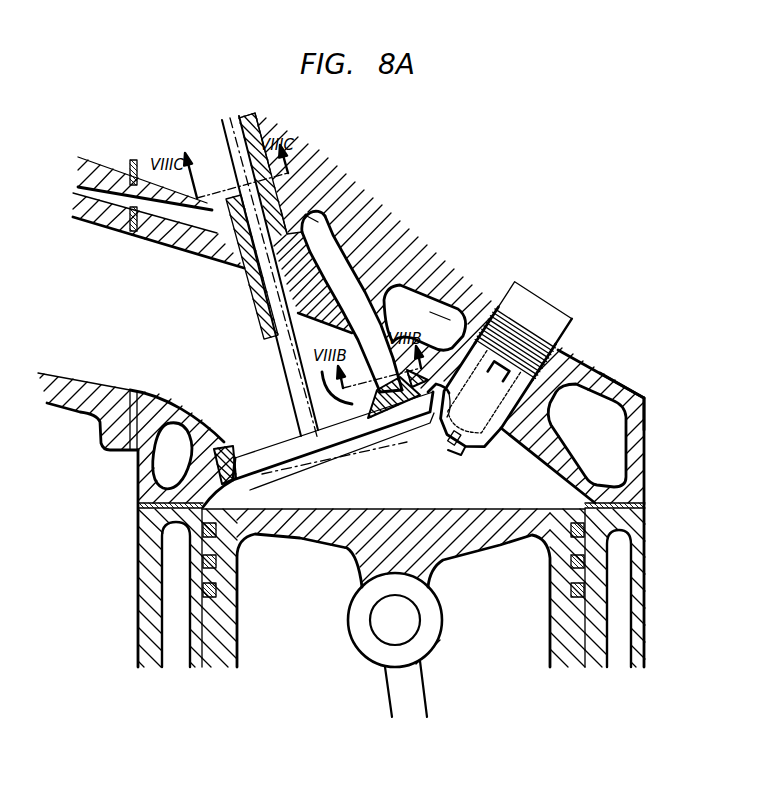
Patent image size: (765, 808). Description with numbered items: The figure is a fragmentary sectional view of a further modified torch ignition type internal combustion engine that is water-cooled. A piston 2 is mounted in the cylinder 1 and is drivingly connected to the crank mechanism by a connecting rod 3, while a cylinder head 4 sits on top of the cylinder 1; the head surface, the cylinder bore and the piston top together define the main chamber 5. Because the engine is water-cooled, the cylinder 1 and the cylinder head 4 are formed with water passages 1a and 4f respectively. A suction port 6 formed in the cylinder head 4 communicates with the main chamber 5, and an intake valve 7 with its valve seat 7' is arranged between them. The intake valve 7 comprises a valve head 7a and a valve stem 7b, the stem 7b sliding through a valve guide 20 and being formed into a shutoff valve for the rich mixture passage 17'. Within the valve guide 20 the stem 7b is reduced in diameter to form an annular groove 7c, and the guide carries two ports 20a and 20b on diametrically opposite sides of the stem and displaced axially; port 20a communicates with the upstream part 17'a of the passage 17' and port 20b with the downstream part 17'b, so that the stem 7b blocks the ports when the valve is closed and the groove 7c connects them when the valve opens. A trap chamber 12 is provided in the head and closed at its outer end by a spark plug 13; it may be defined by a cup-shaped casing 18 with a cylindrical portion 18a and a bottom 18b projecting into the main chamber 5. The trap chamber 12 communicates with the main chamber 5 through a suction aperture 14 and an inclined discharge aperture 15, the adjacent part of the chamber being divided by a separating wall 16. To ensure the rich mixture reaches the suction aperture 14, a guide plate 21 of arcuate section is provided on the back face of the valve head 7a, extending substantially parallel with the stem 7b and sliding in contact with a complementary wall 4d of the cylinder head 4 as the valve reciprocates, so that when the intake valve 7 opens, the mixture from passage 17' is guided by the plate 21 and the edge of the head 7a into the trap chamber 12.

The cylinder 1 is at (633, 522).
The water passage 1a is at (617, 580).
The piston 2 is at (570, 633).
The connecting rod 3 is at (413, 688).
The cylinder head 4 is at (633, 455).
The wall 4d is at (386, 322).
The water passage 4f is at (627, 422).
The main chamber 5 is at (520, 483).
The suction port 6 is at (143, 360).
The intake valve 7 is at (270, 278).
The valve head 7a is at (262, 447).
The valve stem 7b is at (260, 292).
The annular groove 7c is at (257, 207).
The valve seat 7' is at (438, 375).
The trap chamber 12 is at (443, 326).
The spark plug 13 is at (580, 322).
The suction aperture 14 is at (407, 442).
The discharge aperture 15 is at (463, 458).
The separating wall 16 is at (471, 408).
The rich mixture passage 17' is at (375, 253).
The upstream part 17'a is at (145, 166).
The downstream part 17'b is at (354, 301).
The casing 18 is at (556, 367).
The cylindrical portion 18a is at (535, 408).
The bottom 18b is at (447, 443).
The valve guide 20 is at (247, 127).
The port 20a is at (208, 220).
The port 20b is at (312, 222).
The guide plate 21 is at (347, 413).